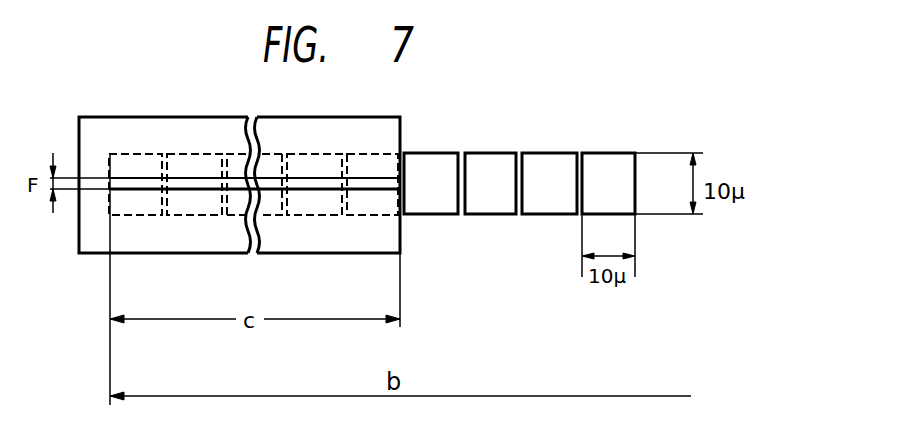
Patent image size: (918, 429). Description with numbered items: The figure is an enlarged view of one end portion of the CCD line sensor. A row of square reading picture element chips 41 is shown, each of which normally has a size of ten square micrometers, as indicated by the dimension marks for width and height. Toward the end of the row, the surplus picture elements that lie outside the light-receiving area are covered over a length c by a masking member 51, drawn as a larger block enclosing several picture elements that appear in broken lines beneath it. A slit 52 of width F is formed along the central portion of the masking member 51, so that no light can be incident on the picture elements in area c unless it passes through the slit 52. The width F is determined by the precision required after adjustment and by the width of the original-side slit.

The reading picture element chip 41 is at (607, 153).
The masking member 51 is at (192, 126).
The slit 52 is at (127, 177).